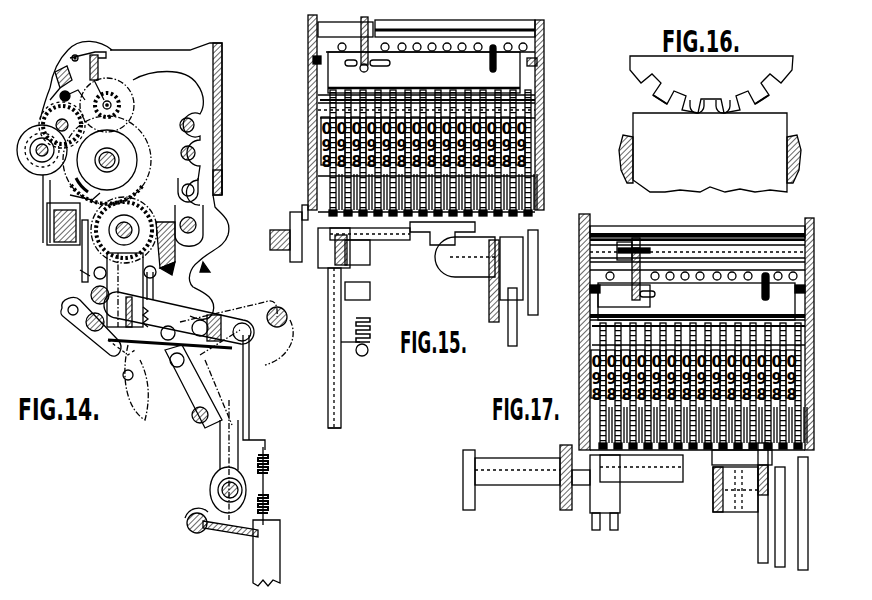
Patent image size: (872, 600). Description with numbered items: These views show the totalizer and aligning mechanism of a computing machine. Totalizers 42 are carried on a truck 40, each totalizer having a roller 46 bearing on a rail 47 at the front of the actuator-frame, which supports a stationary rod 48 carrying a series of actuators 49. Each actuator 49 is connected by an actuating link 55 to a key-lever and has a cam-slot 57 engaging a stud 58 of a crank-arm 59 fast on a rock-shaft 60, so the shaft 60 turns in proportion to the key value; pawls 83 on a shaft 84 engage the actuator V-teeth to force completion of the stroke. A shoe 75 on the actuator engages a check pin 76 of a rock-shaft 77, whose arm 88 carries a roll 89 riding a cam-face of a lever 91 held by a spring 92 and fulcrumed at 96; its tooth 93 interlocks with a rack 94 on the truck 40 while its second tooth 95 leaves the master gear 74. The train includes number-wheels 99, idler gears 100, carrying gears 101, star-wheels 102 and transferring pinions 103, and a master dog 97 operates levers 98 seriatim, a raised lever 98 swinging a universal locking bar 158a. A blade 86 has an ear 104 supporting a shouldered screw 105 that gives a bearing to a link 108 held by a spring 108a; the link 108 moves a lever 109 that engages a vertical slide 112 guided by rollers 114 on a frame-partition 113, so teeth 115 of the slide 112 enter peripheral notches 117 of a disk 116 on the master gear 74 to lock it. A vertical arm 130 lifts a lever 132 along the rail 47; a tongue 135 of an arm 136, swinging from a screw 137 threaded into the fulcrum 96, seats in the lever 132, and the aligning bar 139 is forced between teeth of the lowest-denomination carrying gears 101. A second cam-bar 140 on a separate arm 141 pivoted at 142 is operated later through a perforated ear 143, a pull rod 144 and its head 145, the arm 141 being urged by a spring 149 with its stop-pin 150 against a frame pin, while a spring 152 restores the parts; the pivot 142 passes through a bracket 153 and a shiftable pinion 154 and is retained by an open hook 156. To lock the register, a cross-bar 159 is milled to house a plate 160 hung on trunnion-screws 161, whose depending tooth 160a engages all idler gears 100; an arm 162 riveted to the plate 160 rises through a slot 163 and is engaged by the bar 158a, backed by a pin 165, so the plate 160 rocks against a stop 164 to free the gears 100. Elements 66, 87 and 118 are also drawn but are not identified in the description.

In FIG. 14, the truck 40 is at (222, 105).
In FIG. 14, the totalizer 42 is at (172, 50).
In FIG. 15, the totalizer 42 is at (308, 120).
In FIG. 17, the totalizer 42 is at (590, 226).
In FIG. 14, the roller 46 is at (65, 226).
In FIG. 14, the rail 47 is at (50, 245).
In FIG. 14, the stationary rod 48 is at (233, 306).
In FIG. 14, the actuator 49 is at (272, 366).
In FIG. 14, the actuating link 55 is at (280, 560).
In FIG. 14, the cam-slot 57 is at (205, 350).
In FIG. 14, the stud 58 is at (193, 386).
In FIG. 14, the crank-arm 59 is at (192, 418).
In FIG. 14, the rock-shaft 60 is at (202, 430).
In FIG. 14, the hub 66 is at (133, 229).
In FIG. 14, the master gear 74 is at (124, 230).
In FIG. 14, the tongue or shoe 75 is at (138, 405).
In FIG. 14, the check pin 76 is at (100, 345).
In FIG. 14, the rock-shaft 77 is at (87, 326).
In FIG. 14, the pawl 83 is at (118, 355).
In FIG. 14, the shaft 84 is at (92, 297).
In FIG. 14, the blade 86 is at (218, 537).
In FIG. 14, the roller 87 is at (190, 533).
In FIG. 14, the arm 88 is at (124, 379).
In FIG. 14, the roll 89 is at (153, 316).
In FIG. 14, the lever 91 is at (215, 259).
In FIG. 15, the lever 91 is at (510, 346).
In FIG. 17, the lever 91 is at (778, 567).
In FIG. 14, the spring 92 is at (208, 274).
In FIG. 14, the tooth 93 is at (230, 223).
In FIG. 14, the rack 94 is at (222, 180).
In FIG. 14, the second tooth 95 is at (166, 270).
In FIG. 14, the fulcrum 96 is at (195, 232).
In FIG. 14, the master dog 97 is at (180, 188).
In FIG. 14, the lever 98 is at (174, 95).
In FIG. 14, the number-wheel 99 is at (35, 175).
In FIG. 15, the number-wheel 99 is at (520, 120).
In FIG. 17, the number-wheel 99 is at (600, 345).
In FIG. 14, the idler gear 100 is at (81, 177).
In FIG. 15, the idler gear 100 is at (520, 108).
In FIG. 17, the idler gear 100 is at (600, 326).
In FIG. 14, the carrying gear 101 is at (118, 163).
In FIG. 15, the carrying gear 101 is at (505, 200).
In FIG. 17, the carrying gear 101 is at (612, 432).
In FIG. 14, the star-wheel 102 is at (120, 110).
In FIG. 14, the transferring pinion 103 is at (107, 160).
In FIG. 14, the ear 104 is at (270, 507).
In FIG. 14, the shouldered screw 105 is at (216, 460).
In FIG. 14, the link 108 is at (250, 420).
In FIG. 14, the spring 108a is at (268, 467).
In FIG. 14, the lever 109 is at (179, 318).
In FIG. 14, the vertical slide 112 is at (125, 290).
In FIG. 16, the vertical slide 112 is at (710, 146).
In FIG. 15, the frame-partition 113 is at (532, 315).
In FIG. 17, the frame-partition 113 is at (800, 570).
In FIG. 14, the roller 114 is at (95, 276).
In FIG. 16, the roller 114 is at (621, 150).
In FIG. 16, the tooth 115 is at (752, 104).
In FIG. 14, the disk 116 is at (124, 238).
In FIG. 16, the disk 116 is at (711, 84).
In FIG. 16, the peripheral notch 117 is at (660, 100).
In FIG. 14, the stud 118 is at (218, 495).
In FIG. 14, the vertical arm 130 is at (80, 270).
In FIG. 14, the lever 132 is at (80, 198).
In FIG. 14, the tongue 135 is at (82, 255).
In FIG. 15, the arm 136 is at (490, 300).
In FIG. 17, the arm 136 is at (758, 548).
In FIG. 17, the screw 137 is at (716, 505).
In FIG. 14, the aligning bar 139 is at (107, 160).
In FIG. 15, the aligning bar 139 is at (440, 232).
In FIG. 17, the aligning bar 139 is at (715, 465).
In FIG. 15, the second cam-bar 140 is at (385, 240).
In FIG. 17, the second cam-bar 140 is at (655, 482).
In FIG. 14, the arm 141 is at (166, 237).
In FIG. 15, the arm 141 is at (325, 348).
In FIG. 17, the arm 141 is at (594, 530).
In FIG. 15, the pivot 142 is at (280, 252).
In FIG. 15, the perforated ear 143 is at (345, 260).
In FIG. 15, the pull rod 144 is at (341, 420).
In FIG. 15, the head 145 is at (350, 258).
In FIG. 15, the spring 149 is at (368, 352).
In FIG. 15, the stop-pin 150 is at (370, 288).
In FIG. 17, the spring 152 is at (517, 471).
In FIG. 15, the bracket 153 is at (292, 225).
In FIG. 17, the bracket 153 is at (560, 500).
In FIG. 17, the shiftable pinion 154 is at (465, 495).
In FIG. 15, the open hook 156 is at (304, 206).
In FIG. 17, the open hook 156 is at (576, 488).
In FIG. 14, the universal locking bar 158a is at (84, 50).
In FIG. 17, the universal locking bar 158a is at (738, 226).
In FIG. 14, the cross-bar 159 is at (72, 59).
In FIG. 17, the cross-bar 159 is at (622, 242).
In FIG. 14, the plate 160 is at (60, 97).
In FIG. 15, the plate 160 is at (424, 72).
In FIG. 17, the plate 160 is at (696, 301).
In FIG. 14, the depending tooth 160a is at (43, 125).
In FIG. 15, the depending tooth 160a is at (484, 93).
In FIG. 15, the trunnion-screw 161 is at (312, 60).
In FIG. 17, the trunnion-screw 161 is at (590, 289).
In FIG. 14, the arm 162 is at (100, 68).
In FIG. 15, the arm 162 is at (362, 70).
In FIG. 17, the arm 162 is at (641, 262).
In FIG. 17, the slot 163 is at (626, 297).
In FIG. 14, the stop 164 is at (56, 88).
In FIG. 15, the stop 164 is at (494, 72).
In FIG. 17, the stop 164 is at (764, 300).
In FIG. 14, the backing pin 165 is at (104, 52).
In FIG. 15, the backing pin 165 is at (370, 30).
In FIG. 17, the backing pin 165 is at (640, 240).